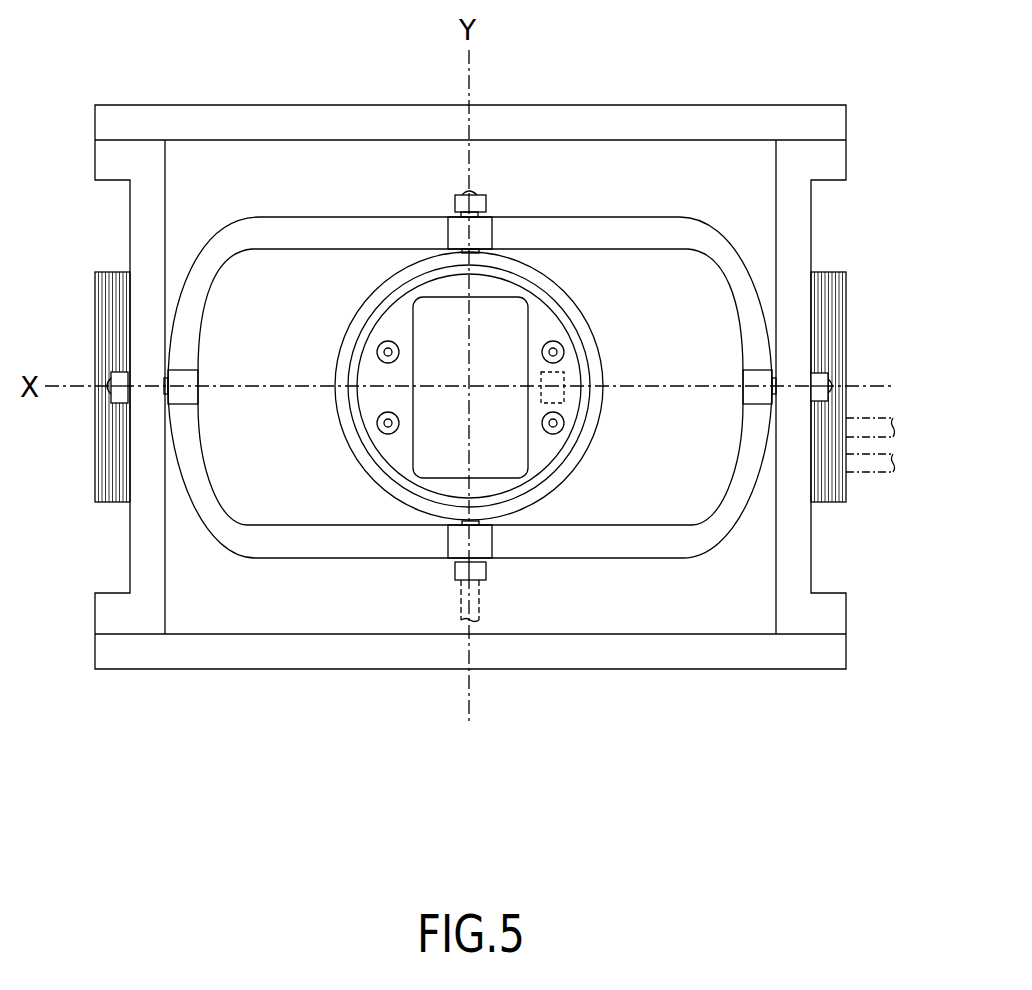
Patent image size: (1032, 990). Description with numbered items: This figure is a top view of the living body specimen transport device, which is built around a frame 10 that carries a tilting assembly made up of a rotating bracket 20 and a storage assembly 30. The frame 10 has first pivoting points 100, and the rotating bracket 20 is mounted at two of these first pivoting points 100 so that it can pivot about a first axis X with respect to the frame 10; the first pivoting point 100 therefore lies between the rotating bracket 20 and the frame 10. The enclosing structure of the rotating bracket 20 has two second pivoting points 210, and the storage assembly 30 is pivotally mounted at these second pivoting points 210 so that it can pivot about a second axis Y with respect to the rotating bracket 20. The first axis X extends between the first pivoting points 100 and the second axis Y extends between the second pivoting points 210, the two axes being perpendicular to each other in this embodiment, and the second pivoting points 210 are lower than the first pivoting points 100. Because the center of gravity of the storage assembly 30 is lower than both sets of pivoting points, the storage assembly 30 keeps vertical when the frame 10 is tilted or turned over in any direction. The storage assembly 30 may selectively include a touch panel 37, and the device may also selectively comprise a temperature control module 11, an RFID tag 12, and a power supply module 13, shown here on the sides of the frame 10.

The frame 10 is at (313, 95).
The temperature control module 11 is at (100, 295).
The power supply module 13 is at (842, 287).
The first pivoting point 100 is at (838, 366).
The rotating bracket 20 is at (261, 216).
The second pivoting point 210 is at (501, 183).
The storage assembly 30 is at (612, 456).
The touch panel 37 is at (433, 438).
The RFID tag 12 is at (555, 382).